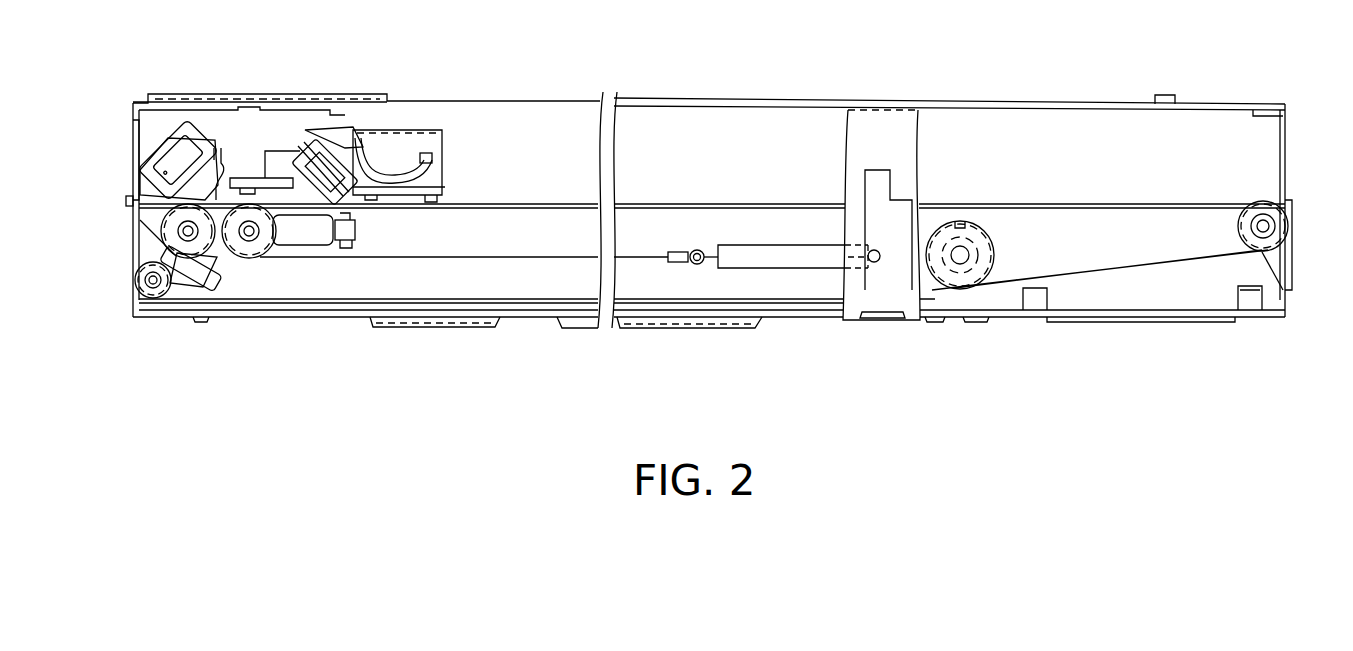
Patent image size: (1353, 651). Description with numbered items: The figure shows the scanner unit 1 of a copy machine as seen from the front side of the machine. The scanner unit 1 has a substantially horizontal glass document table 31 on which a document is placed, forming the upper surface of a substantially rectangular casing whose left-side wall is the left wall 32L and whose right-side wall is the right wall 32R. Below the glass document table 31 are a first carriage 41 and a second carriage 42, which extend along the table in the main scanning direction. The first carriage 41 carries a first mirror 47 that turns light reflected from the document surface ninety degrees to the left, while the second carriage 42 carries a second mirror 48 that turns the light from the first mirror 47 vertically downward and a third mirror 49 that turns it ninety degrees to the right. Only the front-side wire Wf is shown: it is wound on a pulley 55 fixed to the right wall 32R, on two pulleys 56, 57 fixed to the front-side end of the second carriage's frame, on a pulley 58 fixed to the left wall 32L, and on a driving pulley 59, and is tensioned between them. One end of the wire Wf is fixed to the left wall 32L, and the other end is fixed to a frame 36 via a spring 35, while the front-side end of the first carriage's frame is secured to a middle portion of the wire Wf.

The scanner unit 1 is at (1283, 148).
The glass document table 31 is at (985, 100).
The left wall 32L is at (133, 158).
The right wall 32R is at (1290, 192).
The spring 35 is at (810, 262).
The frame 36 is at (913, 297).
The first carriage 41 is at (445, 134).
The second carriage 42 is at (160, 150).
The first mirror 47 is at (348, 157).
The second mirror 48 is at (207, 140).
The third mirror 49 is at (208, 259).
The pulley 55 is at (1262, 205).
The pulley 56 is at (252, 257).
The pulley 57 is at (222, 167).
The pulley 58 is at (153, 299).
The driving pulley 59 is at (993, 256).
The wire Wf is at (716, 203).